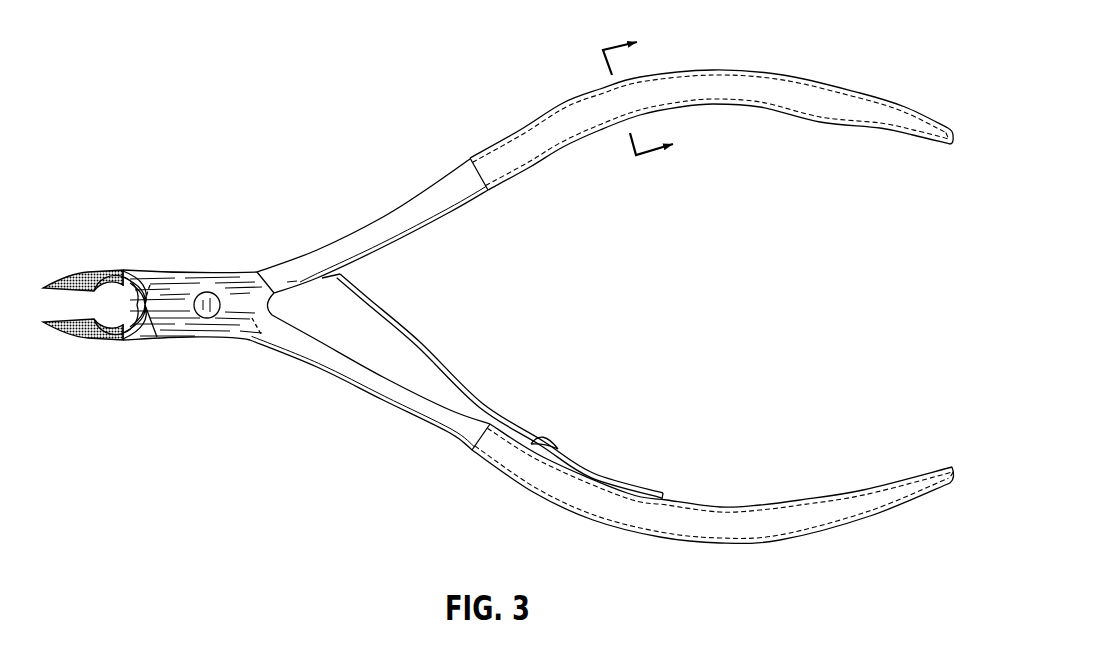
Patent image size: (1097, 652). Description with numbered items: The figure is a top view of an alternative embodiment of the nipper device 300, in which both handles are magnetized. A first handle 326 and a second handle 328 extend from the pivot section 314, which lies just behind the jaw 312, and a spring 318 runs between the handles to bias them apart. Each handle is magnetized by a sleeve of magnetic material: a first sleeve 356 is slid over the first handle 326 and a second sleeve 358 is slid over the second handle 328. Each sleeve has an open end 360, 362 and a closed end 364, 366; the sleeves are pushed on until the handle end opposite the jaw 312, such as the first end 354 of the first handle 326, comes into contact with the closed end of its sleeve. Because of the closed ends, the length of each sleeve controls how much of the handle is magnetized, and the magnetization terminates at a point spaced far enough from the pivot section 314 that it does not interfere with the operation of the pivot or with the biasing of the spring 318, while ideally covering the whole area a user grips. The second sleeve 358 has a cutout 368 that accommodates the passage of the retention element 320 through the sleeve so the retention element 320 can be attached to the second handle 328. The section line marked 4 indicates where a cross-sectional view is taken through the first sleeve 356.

The nipper device 300 is at (211, 118).
The jaw 312 is at (92, 352).
The pivot section 314 is at (199, 351).
The spring 318 is at (448, 359).
The retention element 320 is at (550, 440).
The first handle 326 is at (408, 210).
The second handle 328 is at (368, 372).
The first end 354 is at (938, 154).
The first sleeve 356 is at (783, 75).
The second sleeve 358 is at (732, 536).
The open end 360 is at (495, 205).
The open end 362 is at (460, 458).
The closed end 364 is at (943, 113).
The closed end 366 is at (942, 505).
The cutout 368 is at (548, 463).
The section line 4- 4 is at (648, 88).